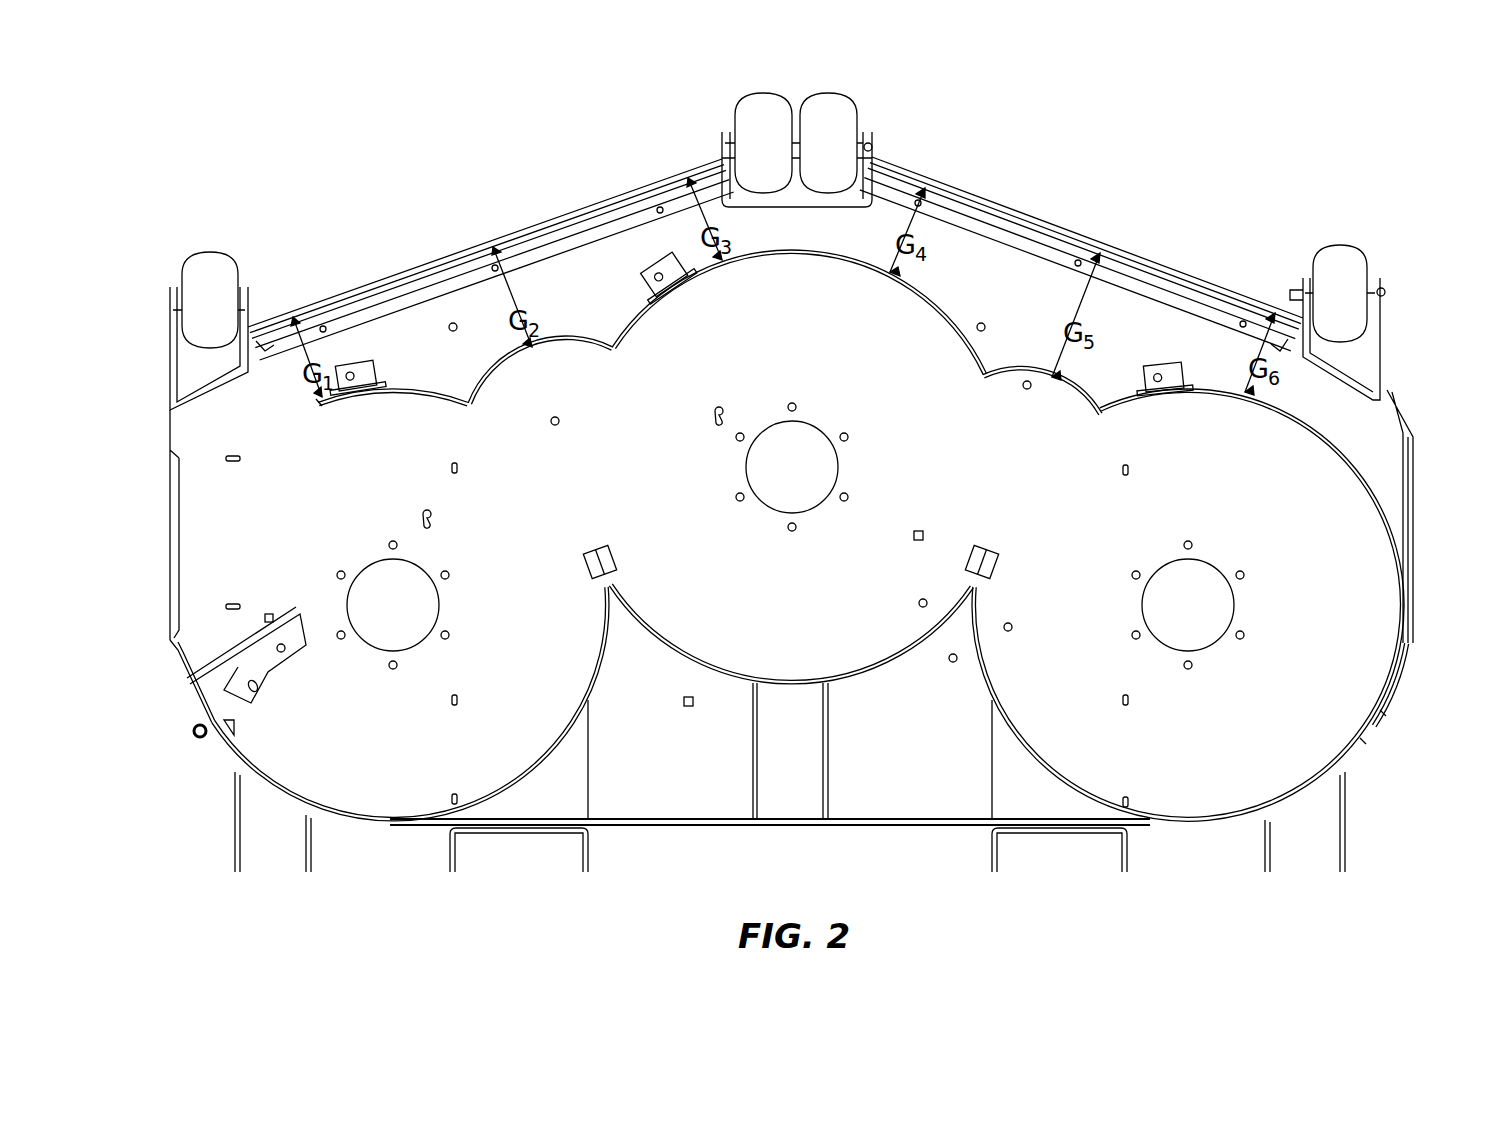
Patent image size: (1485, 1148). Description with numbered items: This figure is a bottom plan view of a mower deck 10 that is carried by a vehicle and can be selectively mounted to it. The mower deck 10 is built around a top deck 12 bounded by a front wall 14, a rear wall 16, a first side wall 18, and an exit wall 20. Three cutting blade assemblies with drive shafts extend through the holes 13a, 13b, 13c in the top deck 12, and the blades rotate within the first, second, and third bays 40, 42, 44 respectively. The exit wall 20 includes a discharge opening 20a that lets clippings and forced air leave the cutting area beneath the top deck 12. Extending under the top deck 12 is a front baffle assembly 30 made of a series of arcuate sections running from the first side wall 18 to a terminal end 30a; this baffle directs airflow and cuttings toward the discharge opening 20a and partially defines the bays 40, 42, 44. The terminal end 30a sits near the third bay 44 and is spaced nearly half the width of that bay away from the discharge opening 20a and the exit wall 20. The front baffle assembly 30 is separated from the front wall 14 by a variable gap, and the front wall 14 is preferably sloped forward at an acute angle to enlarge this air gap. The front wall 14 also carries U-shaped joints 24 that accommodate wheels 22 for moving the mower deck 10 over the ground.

The mower deck 10 is at (1140, 150).
The top deck 12 is at (893, 780).
The hole 13a is at (1218, 605).
The hole 13b is at (820, 462).
The hole 13c is at (423, 605).
The front wall 14 is at (1157, 272).
The rear wall 16 is at (958, 828).
The first side wall 18 is at (1415, 528).
The exit wall 20 is at (185, 675).
The discharge opening 20a is at (172, 548).
The wheel 22 is at (213, 253).
The U-shaped joint 24 is at (172, 385).
The front baffle assembly 30 is at (937, 304).
The terminal end 30a is at (322, 407).
The first bay 40 is at (1290, 715).
The second bay 42 is at (703, 637).
The third bay 44 is at (284, 722).